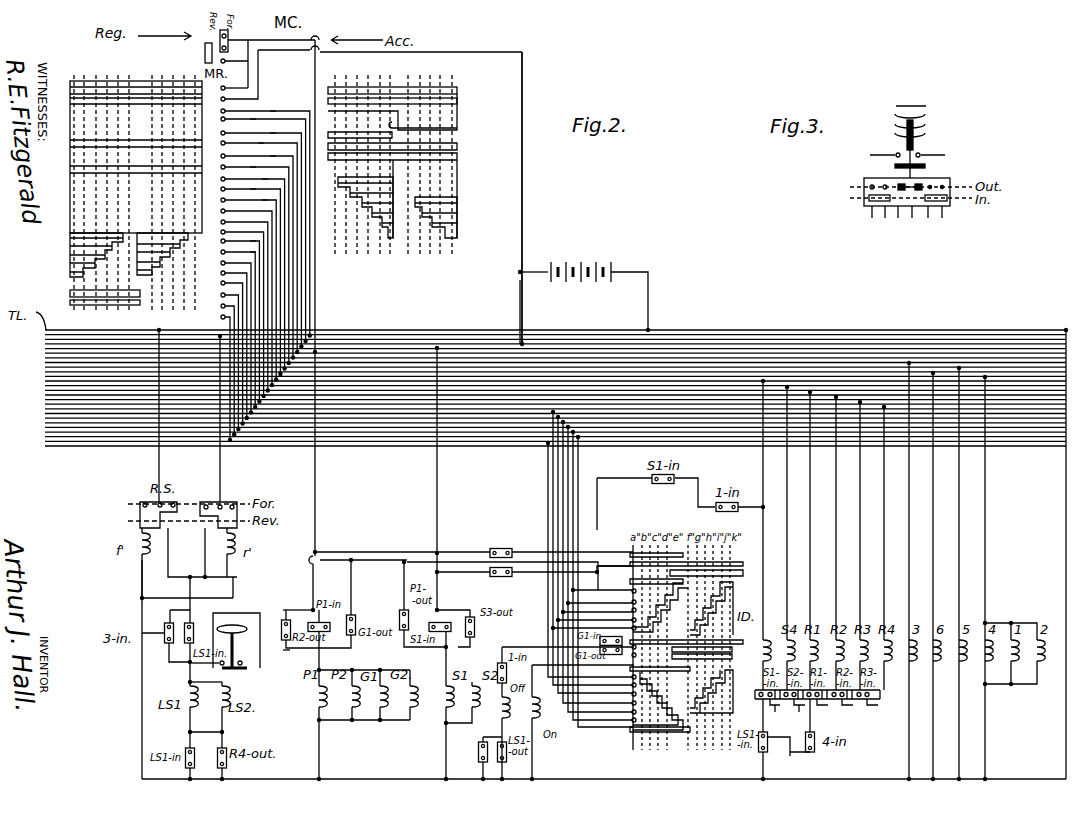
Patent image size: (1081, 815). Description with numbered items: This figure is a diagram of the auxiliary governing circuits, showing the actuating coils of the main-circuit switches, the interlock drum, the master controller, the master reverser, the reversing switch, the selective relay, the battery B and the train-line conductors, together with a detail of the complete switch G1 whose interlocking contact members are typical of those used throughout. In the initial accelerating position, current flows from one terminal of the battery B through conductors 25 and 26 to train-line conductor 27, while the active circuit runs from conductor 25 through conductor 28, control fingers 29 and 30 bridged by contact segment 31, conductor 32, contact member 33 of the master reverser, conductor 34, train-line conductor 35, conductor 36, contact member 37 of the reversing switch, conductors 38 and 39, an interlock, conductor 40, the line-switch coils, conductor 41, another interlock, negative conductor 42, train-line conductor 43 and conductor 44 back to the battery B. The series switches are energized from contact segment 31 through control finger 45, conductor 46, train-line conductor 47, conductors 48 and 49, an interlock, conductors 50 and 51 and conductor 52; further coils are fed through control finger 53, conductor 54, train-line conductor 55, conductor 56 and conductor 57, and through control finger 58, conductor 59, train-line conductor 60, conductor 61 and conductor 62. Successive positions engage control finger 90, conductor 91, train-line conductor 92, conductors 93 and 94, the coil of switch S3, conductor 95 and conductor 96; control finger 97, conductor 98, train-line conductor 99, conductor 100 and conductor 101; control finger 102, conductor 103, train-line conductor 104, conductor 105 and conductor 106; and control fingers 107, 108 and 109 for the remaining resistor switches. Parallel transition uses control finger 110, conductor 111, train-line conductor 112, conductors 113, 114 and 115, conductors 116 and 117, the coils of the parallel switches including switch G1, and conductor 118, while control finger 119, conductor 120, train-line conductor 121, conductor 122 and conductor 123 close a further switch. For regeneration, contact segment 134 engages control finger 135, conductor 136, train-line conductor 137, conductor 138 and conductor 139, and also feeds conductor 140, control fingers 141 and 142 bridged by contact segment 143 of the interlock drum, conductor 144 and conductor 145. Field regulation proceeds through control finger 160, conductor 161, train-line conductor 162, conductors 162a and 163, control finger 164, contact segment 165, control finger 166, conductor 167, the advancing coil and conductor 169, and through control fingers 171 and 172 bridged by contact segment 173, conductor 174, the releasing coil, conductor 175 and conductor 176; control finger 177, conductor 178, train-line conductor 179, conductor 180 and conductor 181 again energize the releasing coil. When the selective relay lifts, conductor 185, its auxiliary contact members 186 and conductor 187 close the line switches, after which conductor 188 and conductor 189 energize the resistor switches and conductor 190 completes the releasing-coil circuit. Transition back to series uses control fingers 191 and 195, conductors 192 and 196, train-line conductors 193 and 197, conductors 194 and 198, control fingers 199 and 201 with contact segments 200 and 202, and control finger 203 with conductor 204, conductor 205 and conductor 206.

In FIG. 2, the conductor 25 is at (535, 272).
In FIG. 2, the conductor 26 is at (521, 297).
In FIG. 2, the train-line conductor 27 is at (530, 337).
In FIG. 2, the conductor 28 is at (522, 233).
In FIG. 2, the control finger 29 is at (233, 77).
In FIG. 2, the control finger 30 is at (228, 88).
In FIG. 2, the contact segment 31 is at (457, 100).
In FIG. 2, the conductor 32 is at (236, 88).
In FIG. 2, the contact member 33 is at (231, 36).
In FIG. 2, the conductor 34 is at (312, 40).
In FIG. 2, the train-line conductor 35 is at (333, 352).
In FIG. 2, the conductor 36 is at (157, 465).
In FIG. 2, the contact member 37 is at (153, 578).
In FIG. 2, the conductor 38 is at (165, 543).
In FIG. 2, the conductor 39 is at (188, 588).
In FIG. 2, the conductor 40 is at (188, 673).
In FIG. 2, the conductor 41 is at (223, 733).
In FIG. 2, the negative conductor 42 is at (1066, 550).
In FIG. 2, the train-line conductor 43 is at (1030, 338).
In FIG. 2, the conductor 44 is at (649, 307).
In FIG. 2, the control finger 45 is at (260, 222).
In FIG. 2, the conductor 46 is at (273, 111).
In FIG. 2, the train-line conductor 47 is at (350, 360).
In FIG. 2, the conductor 48 is at (438, 466).
In FIG. 2, the conductor 49 is at (444, 614).
In FIG. 2, the conductor 50 is at (467, 645).
In FIG. 2, the conductor 51 is at (446, 657).
In FIG. 2, the conductor 52 is at (448, 761).
In FIG. 2, the control finger 53 is at (256, 238).
In FIG. 2, the conductor 54 is at (277, 133).
In FIG. 2, the train-line conductor 55 is at (363, 365).
In FIG. 2, the conductor 56 is at (909, 476).
In FIG. 2, the conductor 57 is at (908, 719).
In FIG. 2, the control finger 58 is at (252, 255).
In FIG. 2, the conductor 59 is at (277, 156).
In FIG. 2, the train-line conductor 60 is at (392, 378).
In FIG. 2, the conductor 61 is at (934, 479).
In FIG. 2, the conductor 62 is at (960, 714).
In FIG. 2, the control finger 90 is at (247, 272).
In FIG. 2, the conductor 91 is at (269, 179).
In FIG. 2, the train-line conductor 92 is at (410, 385).
In FIG. 2, the conductor 93 is at (764, 460).
In FIG. 2, the conductor 94 is at (752, 606).
In FIG. 2, the conductor 95 is at (762, 703).
In FIG. 2, the conductor 96 is at (762, 757).
In FIG. 2, the control finger 97 is at (245, 280).
In FIG. 2, the conductor 98 is at (257, 189).
In FIG. 2, the train-line conductor 99 is at (425, 390).
In FIG. 2, the conductor 100 is at (787, 466).
In FIG. 2, the conductor 101 is at (775, 715).
In FIG. 2, the control finger 102 is at (240, 288).
In FIG. 2, the conductor 103 is at (269, 200).
In FIG. 2, the train-line conductor 104 is at (448, 388).
In FIG. 2, the conductor 105 is at (810, 468).
In FIG. 2, the conductor 106 is at (798, 715).
In FIG. 2, the control finger 107 is at (238, 296).
In FIG. 2, the control finger 108 is at (236, 305).
In FIG. 2, the control finger 109 is at (234, 312).
In FIG. 2, the control finger 110 is at (255, 228).
In FIG. 2, the conductor 111 is at (255, 119).
In FIG. 2, the train-line conductor 112 is at (382, 372).
In FIG. 2, the conductor 113 is at (314, 500).
In FIG. 2, the conductor 114 is at (311, 575).
In FIG. 2, the conductor 115 is at (301, 611).
In FIG. 2, the conductor 116 is at (282, 656).
In FIG. 2, the conductor 117 is at (324, 657).
In FIG. 2, the conductor 118 is at (324, 747).
In FIG. 2, the control finger 119 is at (251, 246).
In FIG. 2, the conductor 120 is at (263, 143).
In FIG. 2, the train-line conductor 121 is at (468, 362).
In FIG. 2, the conductor 122 is at (959, 479).
In FIG. 2, the conductor 123 is at (958, 718).
In FIG. 2, the contact segment 134 is at (85, 147).
In FIG. 2, the control finger 135 is at (246, 263).
In FIG. 2, the conductor 136 is at (257, 167).
In FIG. 2, the train-line conductor 137 is at (490, 375).
In FIG. 2, the conductor 138 is at (985, 479).
In FIG. 2, the conductor 139 is at (985, 742).
In FIG. 2, the conductor 140 is at (265, 575).
In FIG. 2, the control finger 141 is at (636, 566).
In FIG. 2, the control finger 142 is at (640, 637).
In FIG. 2, the contact segment 143 is at (736, 566).
In FIG. 2, the conductor 144 is at (630, 554).
In FIG. 2, the conductor 145 is at (395, 553).
In FIG. 2, the control finger 160 is at (232, 320).
In FIG. 2, the conductor 161 is at (259, 241).
In FIG. 2, the train-line conductor 162 is at (407, 412).
In FIG. 2, the conductor 162a is at (548, 458).
In FIG. 2, the conductor 163 is at (553, 633).
In FIG. 2, the control finger 164 is at (636, 688).
In FIG. 2, the contact segment 165 is at (653, 708).
In FIG. 2, the control finger 166 is at (636, 677).
In FIG. 2, the conductor 167 is at (606, 663).
In FIG. 2, the conductor 169 is at (534, 758).
In FIG. 2, the control finger 171 is at (637, 625).
In FIG. 2, the control finger 172 is at (690, 638).
In FIG. 2, the contact segment 173 is at (657, 615).
In FIG. 2, the conductor 174 is at (517, 648).
In FIG. 2, the conductor 175 is at (502, 724).
In FIG. 2, the conductor 176 is at (503, 768).
In FIG. 2, the control finger 177 is at (230, 328).
In FIG. 2, the conductor 178 is at (261, 252).
In FIG. 2, the train-line conductor 179 is at (292, 418).
In FIG. 2, the conductor 180 is at (553, 477).
In FIG. 2, the conductor 181 is at (590, 626).
In FIG. 2, the conductor 185 is at (237, 631).
In FIG. 2, the auxiliary contact members 186 is at (236, 670).
In FIG. 2, the conductor 187 is at (208, 670).
In FIG. 2, the conductor 188 is at (811, 720).
In FIG. 2, the conductor 189 is at (803, 752).
In FIG. 2, the conductor 190 is at (483, 770).
In FIG. 2, the control finger 191 is at (221, 360).
In FIG. 2, the conductor 192 is at (223, 352).
In FIG. 2, the train-line conductor 193 is at (239, 418).
In FIG. 2, the conductor 194 is at (579, 462).
In FIG. 2, the control finger 195 is at (219, 369).
In FIG. 2, the conductor 196 is at (217, 377).
In FIG. 2, the train-line conductor 197 is at (366, 437).
In FIG. 2, the conductor 198 is at (548, 497).
In FIG. 2, the control finger 199 is at (689, 658).
In FIG. 2, the contact segment 200 is at (716, 686).
In FIG. 2, the control finger 201 is at (689, 649).
In FIG. 2, the contact segment 202 is at (698, 633).
In FIG. 2, the control finger 203 is at (615, 571).
In FIG. 2, the conductor 204 is at (542, 575).
In FIG. 2, the conductor 205 is at (597, 510).
In FIG. 2, the conductor 206 is at (700, 489).
In FIG. 2, the battery B is at (583, 262).
In FIG. 3, the switch G1 is at (928, 146).
In FIG. 2, the switch S3 is at (765, 656).